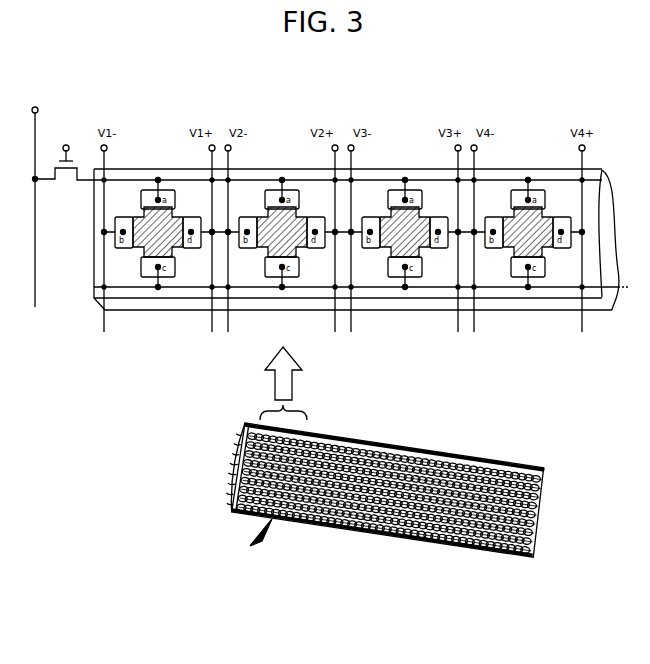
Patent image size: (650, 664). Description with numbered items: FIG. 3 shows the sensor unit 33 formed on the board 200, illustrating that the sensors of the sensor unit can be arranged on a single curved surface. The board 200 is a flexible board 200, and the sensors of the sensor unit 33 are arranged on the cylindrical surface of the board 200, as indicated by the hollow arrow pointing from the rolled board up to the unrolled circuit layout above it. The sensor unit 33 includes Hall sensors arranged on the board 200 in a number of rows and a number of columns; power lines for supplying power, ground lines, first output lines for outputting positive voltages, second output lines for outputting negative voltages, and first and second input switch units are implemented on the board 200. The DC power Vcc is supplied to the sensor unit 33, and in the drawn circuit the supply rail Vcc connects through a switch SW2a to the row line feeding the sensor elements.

The board 200 is at (538, 529).
The sensor unit 33 is at (250, 542).
The switch SW2a is at (64, 153).
The DC power Vcc is at (35, 197).